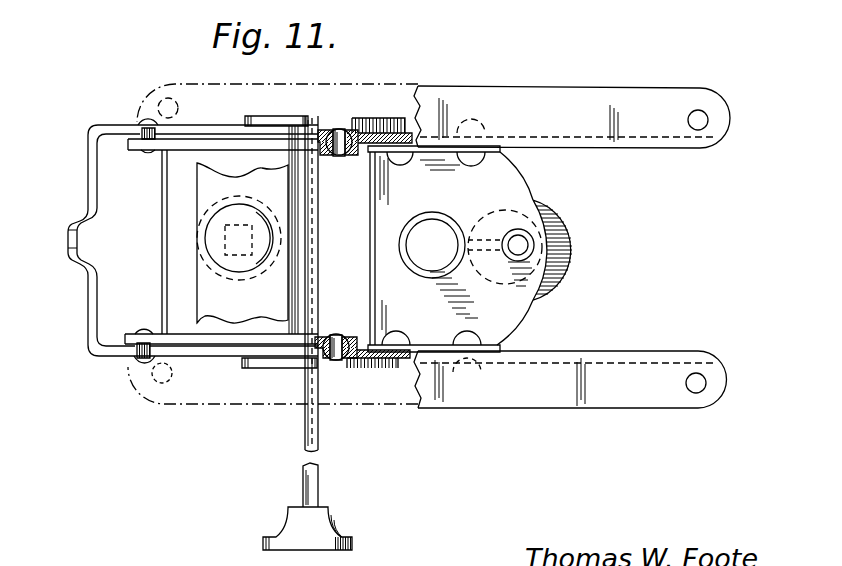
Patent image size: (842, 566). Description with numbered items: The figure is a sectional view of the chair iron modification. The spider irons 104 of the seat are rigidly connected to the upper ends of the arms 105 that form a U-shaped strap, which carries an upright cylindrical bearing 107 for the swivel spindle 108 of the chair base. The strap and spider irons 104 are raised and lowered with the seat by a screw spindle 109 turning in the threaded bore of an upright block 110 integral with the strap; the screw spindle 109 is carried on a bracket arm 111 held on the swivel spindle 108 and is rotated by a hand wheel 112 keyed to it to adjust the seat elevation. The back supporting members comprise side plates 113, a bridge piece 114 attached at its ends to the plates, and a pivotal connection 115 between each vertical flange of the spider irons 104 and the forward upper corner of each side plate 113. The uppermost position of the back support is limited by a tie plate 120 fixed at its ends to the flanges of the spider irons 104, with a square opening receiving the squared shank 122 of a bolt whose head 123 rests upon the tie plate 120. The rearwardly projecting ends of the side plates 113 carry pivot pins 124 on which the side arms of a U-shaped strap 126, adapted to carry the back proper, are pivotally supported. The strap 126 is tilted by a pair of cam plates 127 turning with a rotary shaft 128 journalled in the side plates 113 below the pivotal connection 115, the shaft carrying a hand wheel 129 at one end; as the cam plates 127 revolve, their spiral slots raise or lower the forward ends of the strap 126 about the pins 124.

The spider irons 104 is at (578, 89).
The arms 105 is at (503, 157).
The upright cylindrical bearing 107 is at (412, 267).
The swivel spindle 108 is at (428, 225).
The screw spindle 109 is at (522, 250).
The upright block 110 is at (540, 280).
The bracket arm 111 is at (487, 243).
The hand wheel 112 is at (562, 210).
The side plates 113 is at (215, 149).
The bridge piece 114 is at (167, 268).
The pivotal connection 115 is at (342, 128).
The tie plate 120 is at (242, 243).
The squared shank 122 is at (232, 227).
The head 123 is at (248, 266).
The pivot pins 124 is at (138, 132).
The U-shaped strap 126 is at (100, 190).
The cam plates 127 is at (277, 116).
The rotary shaft 128 is at (304, 440).
The hand wheel 129 is at (331, 527).